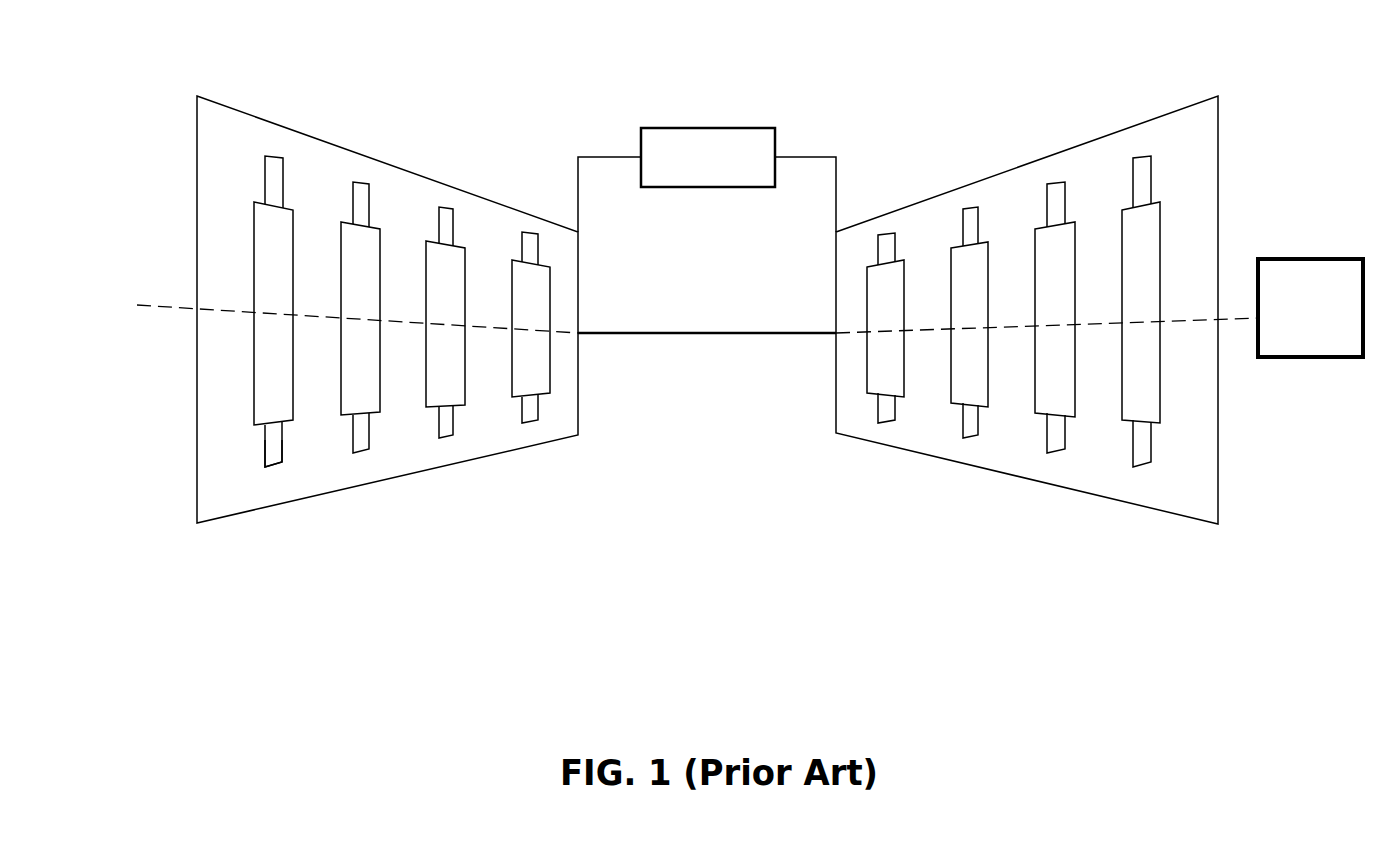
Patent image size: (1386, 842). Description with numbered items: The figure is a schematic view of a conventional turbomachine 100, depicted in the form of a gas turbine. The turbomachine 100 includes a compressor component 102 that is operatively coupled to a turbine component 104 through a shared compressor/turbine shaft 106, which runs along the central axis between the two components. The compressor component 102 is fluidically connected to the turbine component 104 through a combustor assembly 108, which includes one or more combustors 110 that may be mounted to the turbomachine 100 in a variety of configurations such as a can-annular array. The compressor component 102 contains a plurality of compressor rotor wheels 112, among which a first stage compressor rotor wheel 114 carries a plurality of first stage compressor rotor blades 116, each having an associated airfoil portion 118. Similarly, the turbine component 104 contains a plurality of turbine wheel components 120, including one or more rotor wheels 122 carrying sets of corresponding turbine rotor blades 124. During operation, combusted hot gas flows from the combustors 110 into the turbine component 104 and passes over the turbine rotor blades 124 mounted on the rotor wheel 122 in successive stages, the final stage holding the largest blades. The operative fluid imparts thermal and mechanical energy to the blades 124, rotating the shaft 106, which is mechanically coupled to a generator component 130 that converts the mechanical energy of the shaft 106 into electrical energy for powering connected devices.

The turbomachine 100 is at (400, 57).
The compressor component 102 is at (240, 518).
The turbine component 104 is at (1123, 507).
The compressor/turbine shaft 106 is at (647, 333).
The combustor assembly 108 is at (642, 98).
The combustor 110 is at (702, 128).
The compressor rotor wheels 112 is at (327, 473).
The first stage compressor rotor wheel 114 is at (263, 407).
The first stage compressor rotor blades 116 is at (263, 468).
The airfoil portion 118 is at (272, 460).
The turbine wheel components 120 is at (1163, 452).
The rotor wheel 122 is at (900, 400).
The turbine rotor blades 124 is at (880, 237).
The generator component 130 is at (1310, 308).